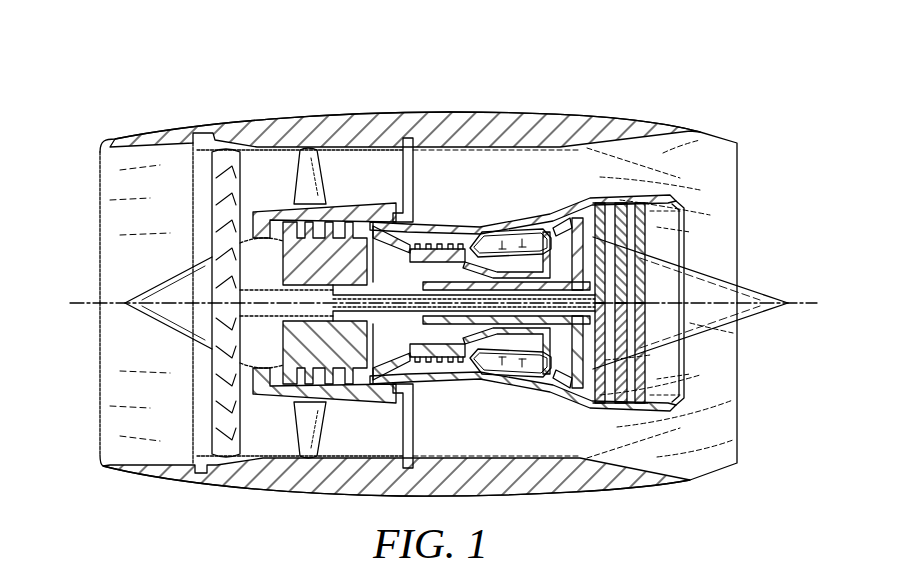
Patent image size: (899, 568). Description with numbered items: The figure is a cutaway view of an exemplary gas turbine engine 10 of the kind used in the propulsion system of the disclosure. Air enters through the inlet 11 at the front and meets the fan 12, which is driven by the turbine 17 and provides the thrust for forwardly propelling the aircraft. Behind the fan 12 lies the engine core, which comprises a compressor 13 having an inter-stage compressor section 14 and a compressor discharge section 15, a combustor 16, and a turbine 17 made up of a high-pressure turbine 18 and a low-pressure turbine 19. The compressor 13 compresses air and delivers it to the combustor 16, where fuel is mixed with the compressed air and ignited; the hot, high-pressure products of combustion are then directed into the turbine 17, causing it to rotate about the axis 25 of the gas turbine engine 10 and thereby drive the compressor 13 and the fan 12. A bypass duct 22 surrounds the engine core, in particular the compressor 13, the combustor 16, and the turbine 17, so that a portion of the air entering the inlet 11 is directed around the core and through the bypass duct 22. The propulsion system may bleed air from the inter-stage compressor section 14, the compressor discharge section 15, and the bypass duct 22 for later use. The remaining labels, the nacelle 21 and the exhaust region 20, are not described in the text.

The gas turbine engine 10 is at (96, 84).
The inlet 11 is at (163, 142).
The fan 12 is at (213, 397).
The compressor 13 is at (407, 203).
The inter-stage compressor section 14 is at (335, 385).
The compressor discharge section 15 is at (435, 244).
The combustor 16 is at (500, 376).
The turbine 17 is at (592, 192).
The high-pressure turbine 18 is at (579, 226).
The low-pressure turbine 19 is at (598, 408).
The exhaust nozzle 20 is at (710, 254).
The nacelle 21 is at (562, 112).
The bypass duct 22 is at (402, 176).
The axis 25 is at (82, 303).